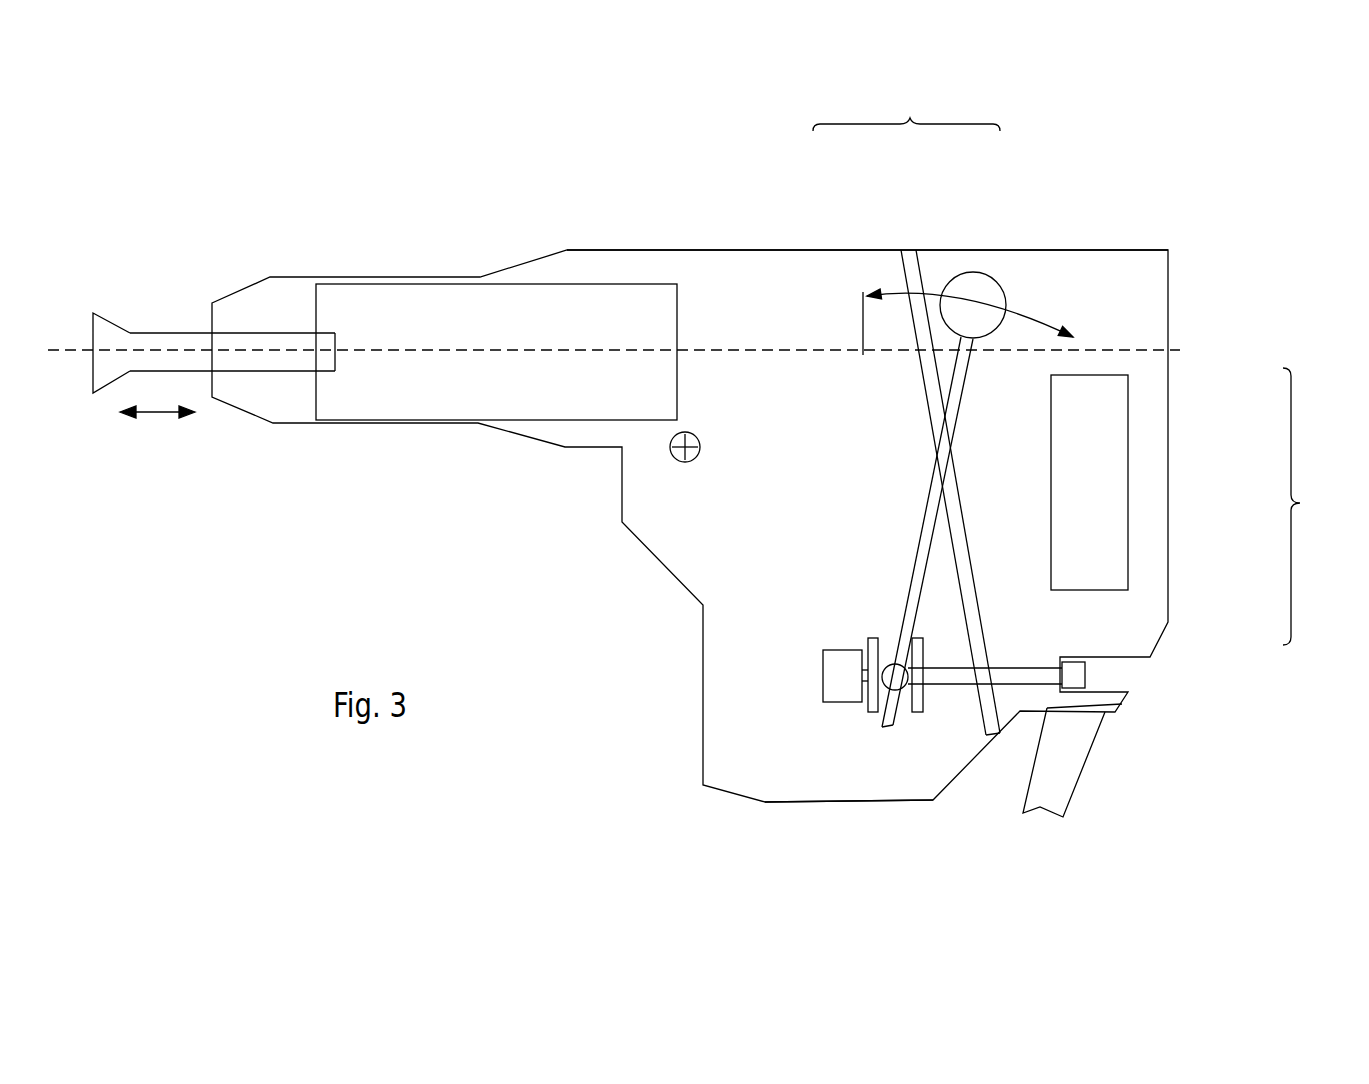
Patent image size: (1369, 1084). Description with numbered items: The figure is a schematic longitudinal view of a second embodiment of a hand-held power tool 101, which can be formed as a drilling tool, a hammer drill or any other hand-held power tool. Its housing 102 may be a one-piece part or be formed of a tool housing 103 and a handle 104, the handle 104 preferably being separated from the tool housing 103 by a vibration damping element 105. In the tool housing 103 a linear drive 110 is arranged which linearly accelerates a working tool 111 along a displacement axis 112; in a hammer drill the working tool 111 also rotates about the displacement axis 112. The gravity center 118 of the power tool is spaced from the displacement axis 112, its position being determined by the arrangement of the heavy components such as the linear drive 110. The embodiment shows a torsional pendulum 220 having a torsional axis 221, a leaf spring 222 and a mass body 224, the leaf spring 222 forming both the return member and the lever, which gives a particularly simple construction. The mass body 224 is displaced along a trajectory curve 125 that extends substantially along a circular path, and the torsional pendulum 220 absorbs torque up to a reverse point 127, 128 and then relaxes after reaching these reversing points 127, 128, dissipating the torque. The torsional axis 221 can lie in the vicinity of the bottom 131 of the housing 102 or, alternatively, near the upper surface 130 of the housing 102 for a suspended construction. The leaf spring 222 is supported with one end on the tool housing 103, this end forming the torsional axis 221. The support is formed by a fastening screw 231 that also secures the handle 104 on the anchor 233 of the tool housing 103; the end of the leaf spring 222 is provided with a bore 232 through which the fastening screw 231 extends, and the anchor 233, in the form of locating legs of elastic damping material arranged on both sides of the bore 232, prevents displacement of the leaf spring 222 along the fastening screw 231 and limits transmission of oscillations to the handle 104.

The hand-held power tool 101 is at (290, 127).
The housing 102 is at (906, 106).
The tool housing 103 is at (841, 199).
The handle 104 is at (976, 199).
The vibration damping element 105 is at (907, 250).
The linear drive 110 is at (509, 284).
The working tool 111 is at (232, 261).
The displacement axis 112 is at (103, 272).
The gravity center 118 is at (673, 452).
The trajectory curve 125 is at (1020, 243).
The reverse point 127 is at (815, 252).
The reverse point 128 is at (1100, 369).
The upper surface 130 is at (867, 199).
The bottom 131 is at (836, 846).
The torsional pendulum 220 is at (1315, 506).
The torsional axis 221 is at (1079, 633).
The leaf spring 222 is at (1079, 532).
The mass body 224 is at (1072, 341).
The fastening screw 231 is at (1169, 649).
The bore 232 is at (714, 644).
The anchor 233 is at (860, 765).